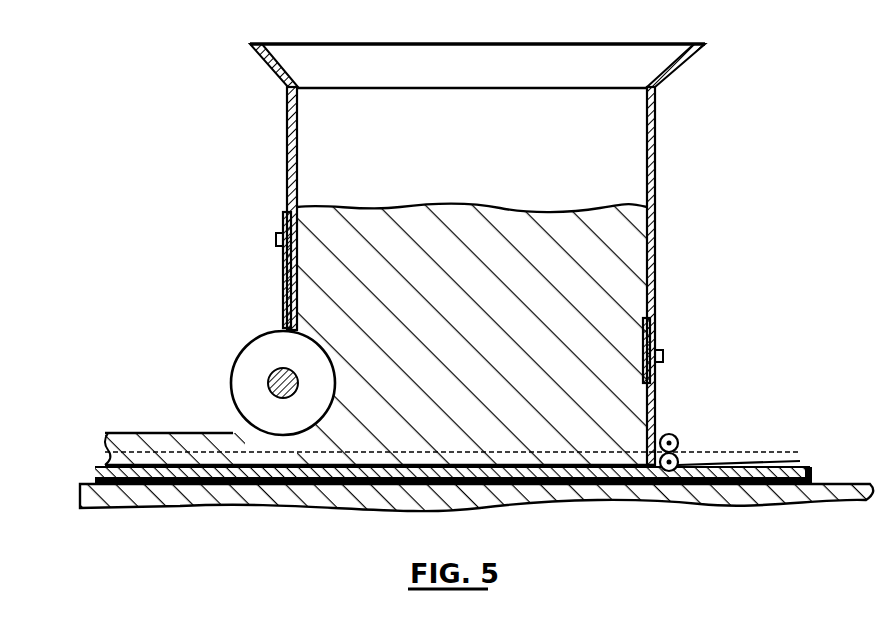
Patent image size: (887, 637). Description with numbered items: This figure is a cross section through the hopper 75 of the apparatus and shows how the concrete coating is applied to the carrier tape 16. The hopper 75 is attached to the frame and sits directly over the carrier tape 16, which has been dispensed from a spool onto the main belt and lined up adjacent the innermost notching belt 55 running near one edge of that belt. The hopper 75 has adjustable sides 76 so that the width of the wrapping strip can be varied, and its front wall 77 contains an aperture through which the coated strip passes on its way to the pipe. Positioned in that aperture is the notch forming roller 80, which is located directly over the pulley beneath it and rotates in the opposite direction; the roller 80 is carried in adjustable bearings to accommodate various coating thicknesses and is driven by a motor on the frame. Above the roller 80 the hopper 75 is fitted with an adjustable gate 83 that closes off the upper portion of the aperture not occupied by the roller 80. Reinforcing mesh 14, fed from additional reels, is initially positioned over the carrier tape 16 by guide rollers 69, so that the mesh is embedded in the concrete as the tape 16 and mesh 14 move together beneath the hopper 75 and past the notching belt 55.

The hopper 75 is at (495, 62).
The front wall 77 is at (287, 146).
The adjustable sides 76 is at (655, 161).
The adjustable gate 83 is at (283, 266).
The notch forming roller 80 is at (250, 352).
The reinforcing mesh 14 is at (724, 452).
The carrier tape 16 is at (95, 465).
The notching belt 55 is at (812, 475).
The guide rollers 69 is at (680, 452).